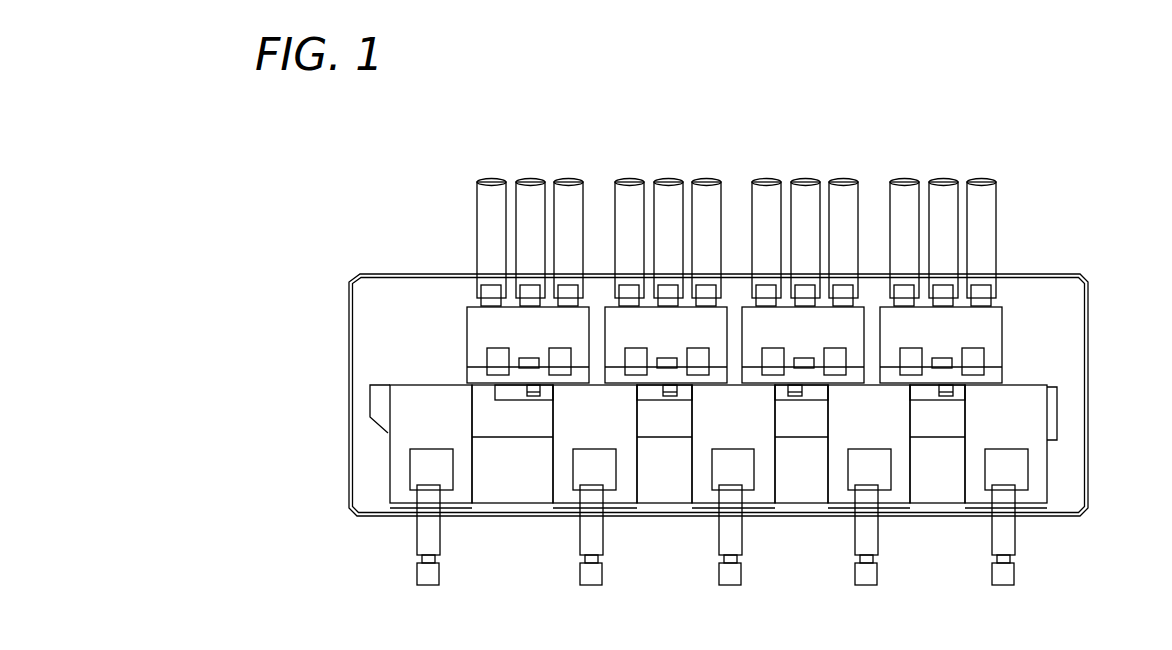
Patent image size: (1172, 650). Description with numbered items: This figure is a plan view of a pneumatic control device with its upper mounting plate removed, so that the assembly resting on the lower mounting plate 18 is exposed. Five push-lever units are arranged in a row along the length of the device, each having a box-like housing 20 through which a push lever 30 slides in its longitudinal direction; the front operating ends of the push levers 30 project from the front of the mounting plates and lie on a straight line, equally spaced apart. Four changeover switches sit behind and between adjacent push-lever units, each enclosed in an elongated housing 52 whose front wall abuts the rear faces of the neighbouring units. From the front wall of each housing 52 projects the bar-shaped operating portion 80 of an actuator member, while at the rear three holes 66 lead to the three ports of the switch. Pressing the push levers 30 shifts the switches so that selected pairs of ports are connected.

The lower mounting plate 18 is at (362, 318).
The holes 66 is at (491, 188).
The housing 52 is at (475, 313).
The operating portion 80 is at (533, 391).
The housing 20 is at (397, 443).
The push lever 30 is at (438, 572).